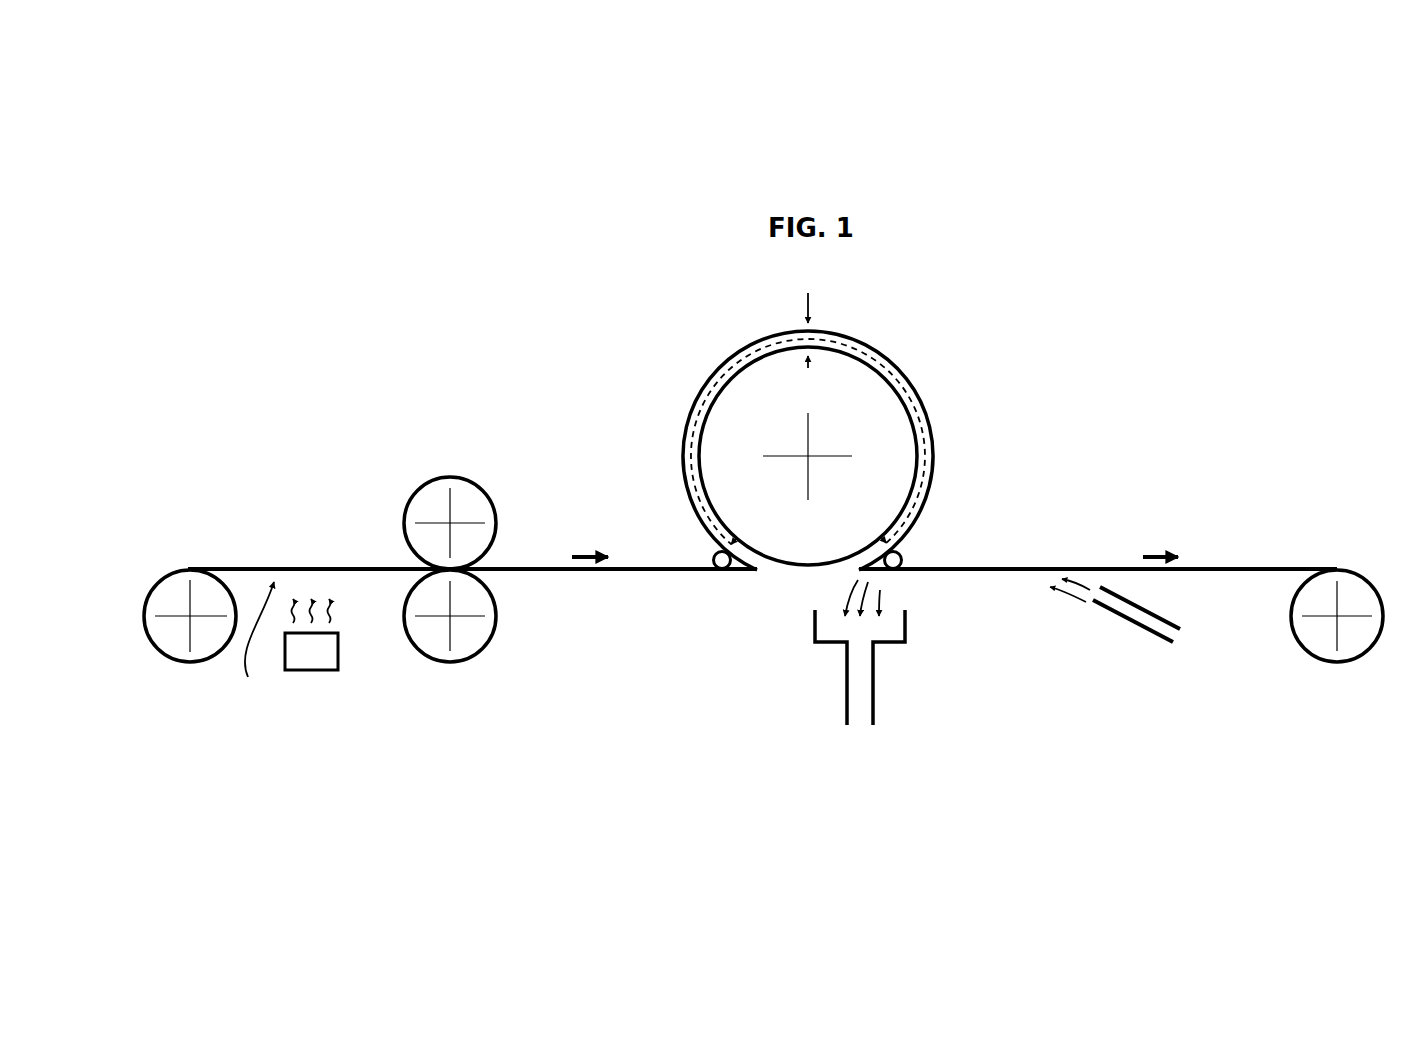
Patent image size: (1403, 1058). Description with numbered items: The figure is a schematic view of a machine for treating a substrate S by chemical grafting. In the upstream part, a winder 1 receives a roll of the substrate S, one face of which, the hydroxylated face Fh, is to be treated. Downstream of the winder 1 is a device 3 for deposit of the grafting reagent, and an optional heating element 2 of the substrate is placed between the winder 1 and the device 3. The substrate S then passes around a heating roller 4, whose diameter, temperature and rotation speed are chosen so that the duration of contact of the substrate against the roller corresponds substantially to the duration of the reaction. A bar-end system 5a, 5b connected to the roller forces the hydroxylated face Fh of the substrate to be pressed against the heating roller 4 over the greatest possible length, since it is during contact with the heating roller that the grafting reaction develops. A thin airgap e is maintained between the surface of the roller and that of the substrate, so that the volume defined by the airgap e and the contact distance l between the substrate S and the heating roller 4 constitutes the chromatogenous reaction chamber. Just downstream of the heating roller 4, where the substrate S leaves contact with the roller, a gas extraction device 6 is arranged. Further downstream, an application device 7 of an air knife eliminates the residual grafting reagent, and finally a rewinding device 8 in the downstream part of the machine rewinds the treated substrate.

The winder 1 is at (190, 663).
The heating element 2 is at (338, 650).
The device for deposit of the grafting reagent 3 is at (516, 492).
The heating roller 4 is at (872, 425).
The bar-end system 5a is at (713, 554).
The bar-end system 5b is at (902, 555).
The gas extraction device 6 is at (905, 625).
The application device of an air knife 7 is at (1130, 623).
The rewinding device 8 is at (1336, 662).
The substrate S is at (248, 560).
The hydroxylated face Fh is at (261, 642).
The airgap e is at (817, 330).
The contact distance l is at (925, 456).